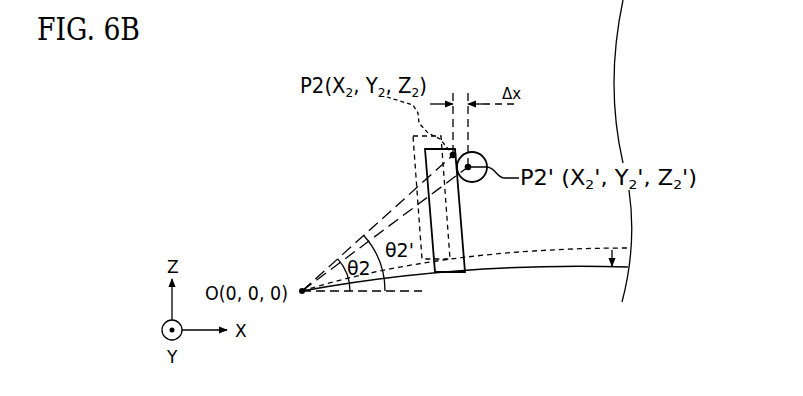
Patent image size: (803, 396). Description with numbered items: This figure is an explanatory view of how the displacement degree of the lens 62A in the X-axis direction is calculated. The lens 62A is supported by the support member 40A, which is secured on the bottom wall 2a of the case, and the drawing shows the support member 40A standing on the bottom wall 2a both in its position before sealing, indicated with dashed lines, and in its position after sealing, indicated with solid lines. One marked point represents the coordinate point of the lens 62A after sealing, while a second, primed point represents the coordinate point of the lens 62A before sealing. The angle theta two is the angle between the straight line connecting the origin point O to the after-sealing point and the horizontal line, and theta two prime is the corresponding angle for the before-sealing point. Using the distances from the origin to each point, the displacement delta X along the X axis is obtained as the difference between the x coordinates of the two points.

The lens 62A is at (482, 156).
The support member 40A is at (452, 271).
The bottom wall 2a is at (550, 268).